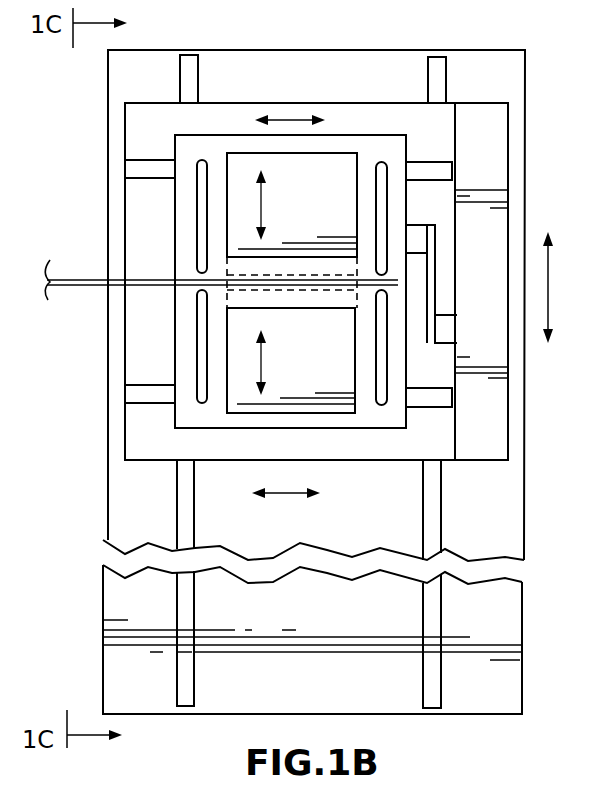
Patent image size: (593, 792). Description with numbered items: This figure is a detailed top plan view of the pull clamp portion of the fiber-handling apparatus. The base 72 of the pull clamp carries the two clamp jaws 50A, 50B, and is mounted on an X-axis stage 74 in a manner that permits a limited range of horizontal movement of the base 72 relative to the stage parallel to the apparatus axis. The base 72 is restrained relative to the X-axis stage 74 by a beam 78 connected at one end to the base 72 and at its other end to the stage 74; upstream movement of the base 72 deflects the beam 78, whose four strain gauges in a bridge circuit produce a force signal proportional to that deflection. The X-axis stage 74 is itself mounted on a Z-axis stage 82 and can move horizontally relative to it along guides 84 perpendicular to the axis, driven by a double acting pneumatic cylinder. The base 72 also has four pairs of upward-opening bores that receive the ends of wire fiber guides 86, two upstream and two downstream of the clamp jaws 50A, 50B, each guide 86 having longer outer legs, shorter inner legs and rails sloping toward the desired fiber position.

The clamp jaw 50A is at (340, 218).
The clamp jaw 50B is at (340, 374).
The base 72 is at (210, 423).
The X-axis stage 74 is at (232, 452).
The beam 78 is at (435, 279).
The Z-axis stage 82 is at (328, 623).
The guides 84 is at (195, 605).
The wire fiber guide 86 is at (197, 221).